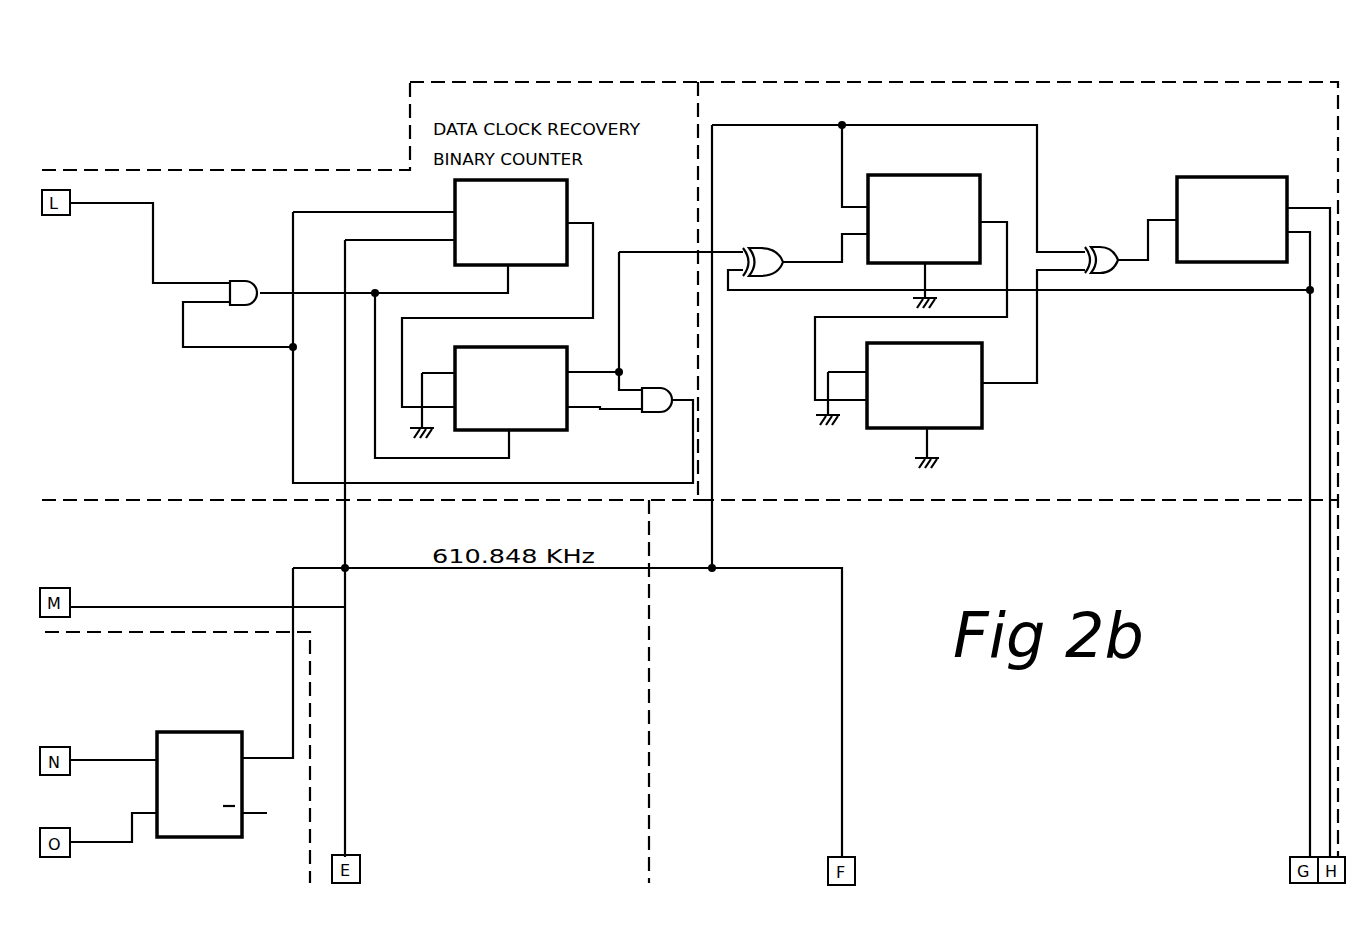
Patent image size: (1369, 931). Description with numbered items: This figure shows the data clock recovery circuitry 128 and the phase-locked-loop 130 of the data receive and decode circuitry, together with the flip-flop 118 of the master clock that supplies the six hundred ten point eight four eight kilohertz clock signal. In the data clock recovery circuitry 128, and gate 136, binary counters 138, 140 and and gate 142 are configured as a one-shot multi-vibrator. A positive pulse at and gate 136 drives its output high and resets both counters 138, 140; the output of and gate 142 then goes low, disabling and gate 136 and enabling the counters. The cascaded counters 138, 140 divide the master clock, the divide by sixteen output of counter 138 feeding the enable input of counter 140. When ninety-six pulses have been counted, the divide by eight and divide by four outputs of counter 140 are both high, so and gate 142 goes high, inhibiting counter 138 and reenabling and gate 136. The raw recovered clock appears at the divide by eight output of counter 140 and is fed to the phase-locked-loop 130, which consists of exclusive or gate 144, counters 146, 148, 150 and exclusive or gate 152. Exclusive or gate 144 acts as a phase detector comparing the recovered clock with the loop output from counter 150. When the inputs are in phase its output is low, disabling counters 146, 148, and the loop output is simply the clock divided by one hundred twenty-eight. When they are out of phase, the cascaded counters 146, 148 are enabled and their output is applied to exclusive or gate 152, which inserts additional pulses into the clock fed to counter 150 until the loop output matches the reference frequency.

The flip-flop 118 is at (202, 732).
The data clock recovery circuitry 128 is at (347, 170).
The phase-locked-loop 130 is at (1226, 76).
The and gate 136 is at (233, 280).
The binary counter 138 is at (567, 191).
The binary counter 140 is at (557, 430).
The and gate 142 is at (663, 413).
The exclusive or gate 144 is at (778, 276).
The binary counter 146 is at (980, 188).
The binary counter 148 is at (867, 425).
The binary counter 150 is at (1240, 263).
The exclusive or gate 152 is at (1106, 248).